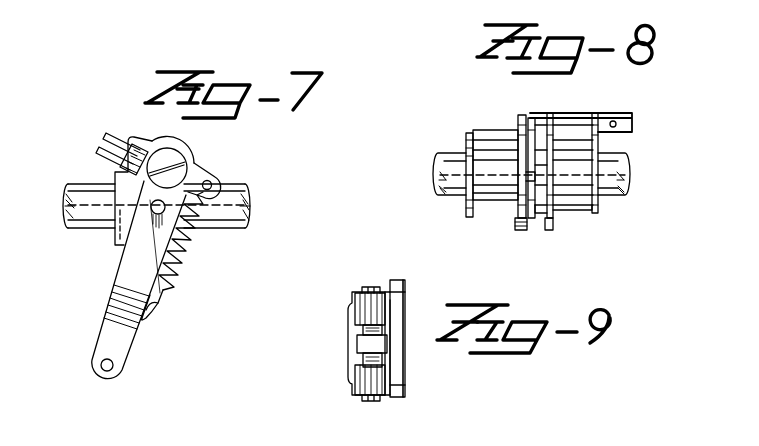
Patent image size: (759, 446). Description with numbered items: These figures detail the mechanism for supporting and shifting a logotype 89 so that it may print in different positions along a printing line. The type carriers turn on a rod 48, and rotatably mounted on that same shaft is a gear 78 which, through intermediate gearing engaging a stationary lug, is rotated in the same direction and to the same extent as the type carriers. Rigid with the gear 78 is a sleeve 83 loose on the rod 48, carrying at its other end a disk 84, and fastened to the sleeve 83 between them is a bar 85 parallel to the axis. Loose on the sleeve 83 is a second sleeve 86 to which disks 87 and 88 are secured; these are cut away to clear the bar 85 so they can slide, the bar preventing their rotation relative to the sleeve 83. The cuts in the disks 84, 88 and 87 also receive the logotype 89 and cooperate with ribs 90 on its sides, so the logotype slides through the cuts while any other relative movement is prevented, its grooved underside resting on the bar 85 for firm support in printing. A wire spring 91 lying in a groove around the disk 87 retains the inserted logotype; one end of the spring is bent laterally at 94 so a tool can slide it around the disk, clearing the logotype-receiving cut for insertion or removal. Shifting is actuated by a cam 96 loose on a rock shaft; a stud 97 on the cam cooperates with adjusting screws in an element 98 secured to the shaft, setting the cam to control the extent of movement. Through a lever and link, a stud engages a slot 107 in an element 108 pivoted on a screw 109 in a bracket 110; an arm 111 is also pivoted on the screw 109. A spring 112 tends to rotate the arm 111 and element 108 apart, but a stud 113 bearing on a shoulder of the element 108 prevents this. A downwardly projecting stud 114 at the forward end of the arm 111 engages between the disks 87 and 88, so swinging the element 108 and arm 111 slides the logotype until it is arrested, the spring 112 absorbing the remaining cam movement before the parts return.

In FIG. 8, the rod 48 is at (438, 190).
In FIG. 8, the gear 78 is at (468, 218).
In FIG. 8, the sleeve 83 is at (567, 208).
In FIG. 8, the disk 84 is at (598, 212).
In FIG. 8, the bar 85 is at (510, 138).
In FIG. 8, the sleeve 86 is at (535, 214).
In FIG. 8, the disk 87 is at (517, 229).
In FIG. 8, the disk 88 is at (549, 225).
In FIG. 8, the logotype 89 is at (630, 116).
In FIG. 8, the ribs 90 is at (614, 126).
In FIG. 8, the wire spring 91 is at (522, 117).
In FIG. 8, the bent end 94 is at (527, 172).
In FIG. 9, the cam 96 is at (397, 322).
In FIG. 9, the stud 97 is at (357, 343).
In FIG. 9, the element 98 is at (366, 382).
In FIG. 7, the slot 107 is at (117, 157).
In FIG. 7, the element 108 is at (160, 157).
In FIG. 7, the screw 109 is at (186, 157).
In FIG. 7, the bracket 110 is at (117, 246).
In FIG. 7, the arm 111 is at (112, 347).
In FIG. 7, the spring 112 is at (181, 258).
In FIG. 7, the stud 113 is at (152, 204).
In FIG. 7, the stud 114 is at (115, 370).